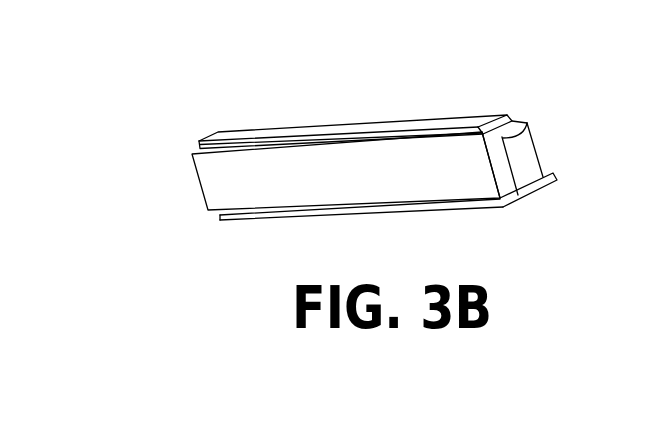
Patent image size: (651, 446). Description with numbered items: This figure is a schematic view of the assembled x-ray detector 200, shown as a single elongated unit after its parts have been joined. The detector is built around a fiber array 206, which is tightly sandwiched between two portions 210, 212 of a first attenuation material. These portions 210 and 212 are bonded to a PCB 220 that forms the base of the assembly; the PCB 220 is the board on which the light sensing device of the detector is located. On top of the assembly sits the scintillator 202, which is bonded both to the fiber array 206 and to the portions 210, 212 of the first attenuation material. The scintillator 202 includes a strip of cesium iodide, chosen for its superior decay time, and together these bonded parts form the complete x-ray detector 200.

The x-ray detector 200 is at (130, 74).
The scintillator 202 is at (300, 127).
The fiber array 206 is at (528, 119).
The portion of first attenuation material 210 is at (198, 178).
The portion of first attenuation material 212 is at (535, 137).
The PCB 220 is at (557, 178).